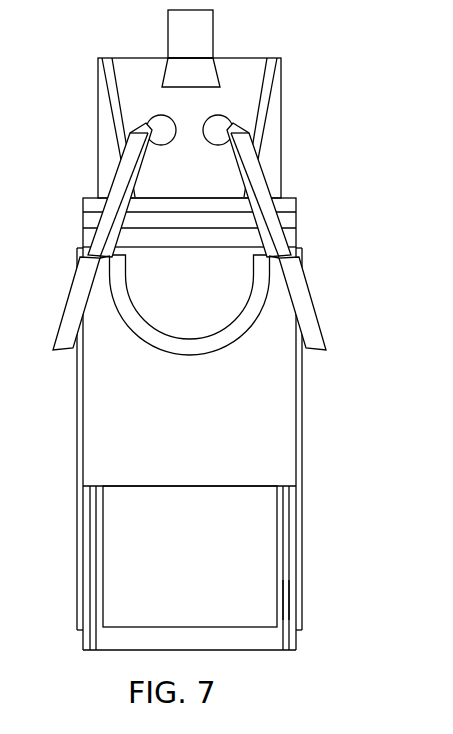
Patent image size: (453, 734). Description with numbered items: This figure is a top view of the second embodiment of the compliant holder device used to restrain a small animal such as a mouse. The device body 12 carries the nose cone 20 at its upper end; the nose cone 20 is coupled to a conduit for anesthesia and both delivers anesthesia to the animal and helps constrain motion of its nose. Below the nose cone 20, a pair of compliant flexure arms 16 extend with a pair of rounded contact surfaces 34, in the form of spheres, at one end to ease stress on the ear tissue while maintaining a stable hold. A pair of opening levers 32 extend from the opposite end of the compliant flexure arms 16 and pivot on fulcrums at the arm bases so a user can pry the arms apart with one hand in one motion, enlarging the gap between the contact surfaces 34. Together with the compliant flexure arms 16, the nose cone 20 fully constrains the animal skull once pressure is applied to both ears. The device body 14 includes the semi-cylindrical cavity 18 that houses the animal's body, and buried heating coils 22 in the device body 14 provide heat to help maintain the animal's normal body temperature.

The device body 12 is at (270, 427).
The device body 14 is at (252, 548).
The compliant flexure arms 16 is at (128, 205).
The semi-cylindrical cavity 18 is at (193, 542).
The nose cone 20 is at (198, 38).
The buried heating coils 22 is at (288, 610).
The opening levers 32 is at (72, 303).
The rounded contact surfaces 34 is at (157, 120).